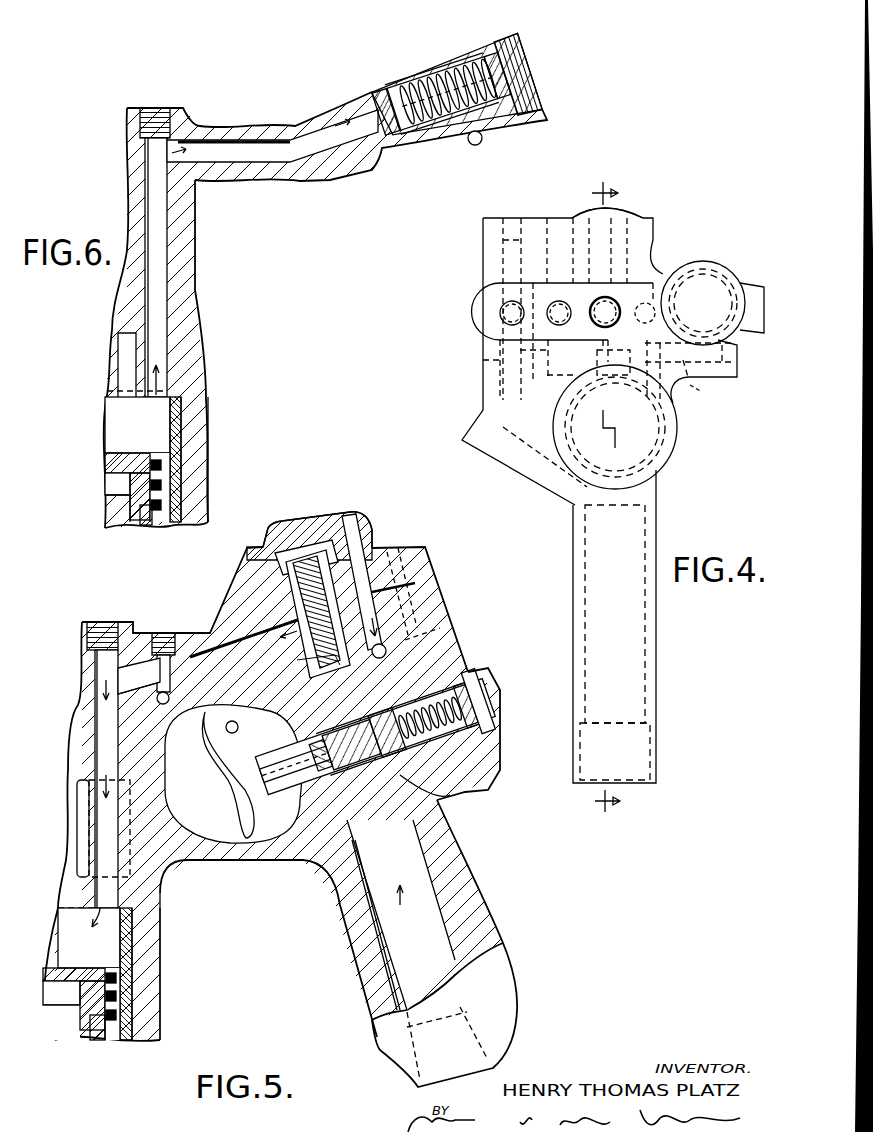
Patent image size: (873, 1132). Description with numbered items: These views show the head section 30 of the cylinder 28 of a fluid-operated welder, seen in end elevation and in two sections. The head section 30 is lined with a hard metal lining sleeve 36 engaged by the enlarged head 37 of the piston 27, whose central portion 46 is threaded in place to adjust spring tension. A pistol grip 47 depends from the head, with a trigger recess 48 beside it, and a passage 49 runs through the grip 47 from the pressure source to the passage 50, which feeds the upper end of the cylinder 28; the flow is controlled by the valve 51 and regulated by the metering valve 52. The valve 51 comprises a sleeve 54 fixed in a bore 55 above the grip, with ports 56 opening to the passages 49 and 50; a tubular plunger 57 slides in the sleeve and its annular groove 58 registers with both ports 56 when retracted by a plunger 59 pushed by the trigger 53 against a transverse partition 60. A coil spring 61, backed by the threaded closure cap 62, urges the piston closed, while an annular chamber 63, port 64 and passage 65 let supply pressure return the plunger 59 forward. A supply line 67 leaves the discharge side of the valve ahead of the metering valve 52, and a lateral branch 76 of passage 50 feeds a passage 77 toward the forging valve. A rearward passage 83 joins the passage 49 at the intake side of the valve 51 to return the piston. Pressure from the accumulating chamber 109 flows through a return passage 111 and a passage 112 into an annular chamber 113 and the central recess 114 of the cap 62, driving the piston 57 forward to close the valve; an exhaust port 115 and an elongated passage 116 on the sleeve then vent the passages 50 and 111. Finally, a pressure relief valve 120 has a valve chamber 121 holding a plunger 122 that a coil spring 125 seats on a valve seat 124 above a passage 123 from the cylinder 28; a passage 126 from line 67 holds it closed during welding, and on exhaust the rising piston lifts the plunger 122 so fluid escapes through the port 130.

In FIG. 6, the piston 27 is at (132, 518).
In FIG. 5, the piston 27 is at (100, 1030).
In FIG. 6, the cylinder 28 is at (152, 418).
In FIG. 5, the cylinder 28 is at (113, 937).
In FIG. 6, the head section 30 is at (196, 450).
In FIG. 5, the head section 30 is at (150, 990).
In FIG. 6, the lining sleeve 36 is at (171, 433).
In FIG. 5, the lining sleeve 36 is at (121, 948).
In FIG. 6, the enlarged head 37 is at (136, 478).
In FIG. 5, the enlarged head 37 is at (95, 997).
In FIG. 6, the central portion 46 is at (106, 456).
In FIG. 5, the central portion 46 is at (50, 975).
In FIG. 4, the pistol grip 47 is at (650, 637).
In FIG. 5, the pistol grip 47 is at (470, 892).
In FIG. 5, the trigger recess 48 is at (205, 838).
In FIG. 4, the passage 49 is at (592, 616).
In FIG. 5, the passage 49 is at (381, 941).
In FIG. 6, the passage 50 is at (172, 248).
In FIG. 4, the passage 50 is at (628, 290).
In FIG. 5, the passage 50 is at (203, 655).
In FIG. 4, the valve 51 is at (674, 430).
In FIG. 5, the valve 51 is at (420, 790).
In FIG. 4, the metering valve 52 is at (625, 232).
In FIG. 5, the metering valve 52 is at (265, 597).
In FIG. 5, the trigger 53 is at (238, 795).
In FIG. 5, the sleeve 54 is at (385, 775).
In FIG. 5, the bore 55 is at (322, 795).
In FIG. 5, the ports 56 is at (283, 730).
In FIG. 5, the tubular plunger 57 is at (310, 785).
In FIG. 5, the annular groove 58 is at (356, 835).
In FIG. 5, the plunger 59 is at (300, 810).
In FIG. 5, the transverse partition 60 is at (415, 778).
In FIG. 5, the coil spring 61 is at (455, 700).
In FIG. 5, the closure cap 62 is at (490, 700).
In FIG. 5, the annular chamber 63 is at (280, 740).
In FIG. 5, the port 64 is at (375, 737).
In FIG. 5, the passage 65 is at (295, 763).
In FIG. 4, the fluid pressure supply line 67 is at (548, 317).
In FIG. 5, the lateral branch 76 is at (118, 684).
In FIG. 5, the passage 77 is at (103, 748).
In FIG. 4, the passage 83 is at (500, 313).
In FIG. 6, the accumulating chamber 109 is at (117, 340).
In FIG. 5, the accumulating chamber 109 is at (77, 833).
In FIG. 4, the fluid pressure return passage 111 is at (650, 300).
In FIG. 5, the passage 112 is at (440, 630).
In FIG. 5, the annular chamber 113 is at (470, 755).
In FIG. 5, the central recess 114 is at (460, 683).
In FIG. 5, the exhaust port 115 is at (480, 760).
In FIG. 5, the elongated passage 116 is at (410, 622).
In FIG. 6, the pressure relief valve 120 is at (408, 53).
In FIG. 4, the pressure relief valve 120 is at (715, 283).
In FIG. 6, the valve chamber 121 is at (506, 121).
In FIG. 6, the plunger 122 is at (416, 118).
In FIG. 6, the passage 123 is at (330, 148).
In FIG. 6, the valve seat 124 is at (378, 100).
In FIG. 6, the coil spring 125 is at (528, 84).
In FIG. 6, the passage 126 is at (477, 148).
In FIG. 4, the passage 126 is at (702, 392).
In FIG. 5, the passage 126 is at (410, 597).
In FIG. 6, the port 130 is at (420, 130).